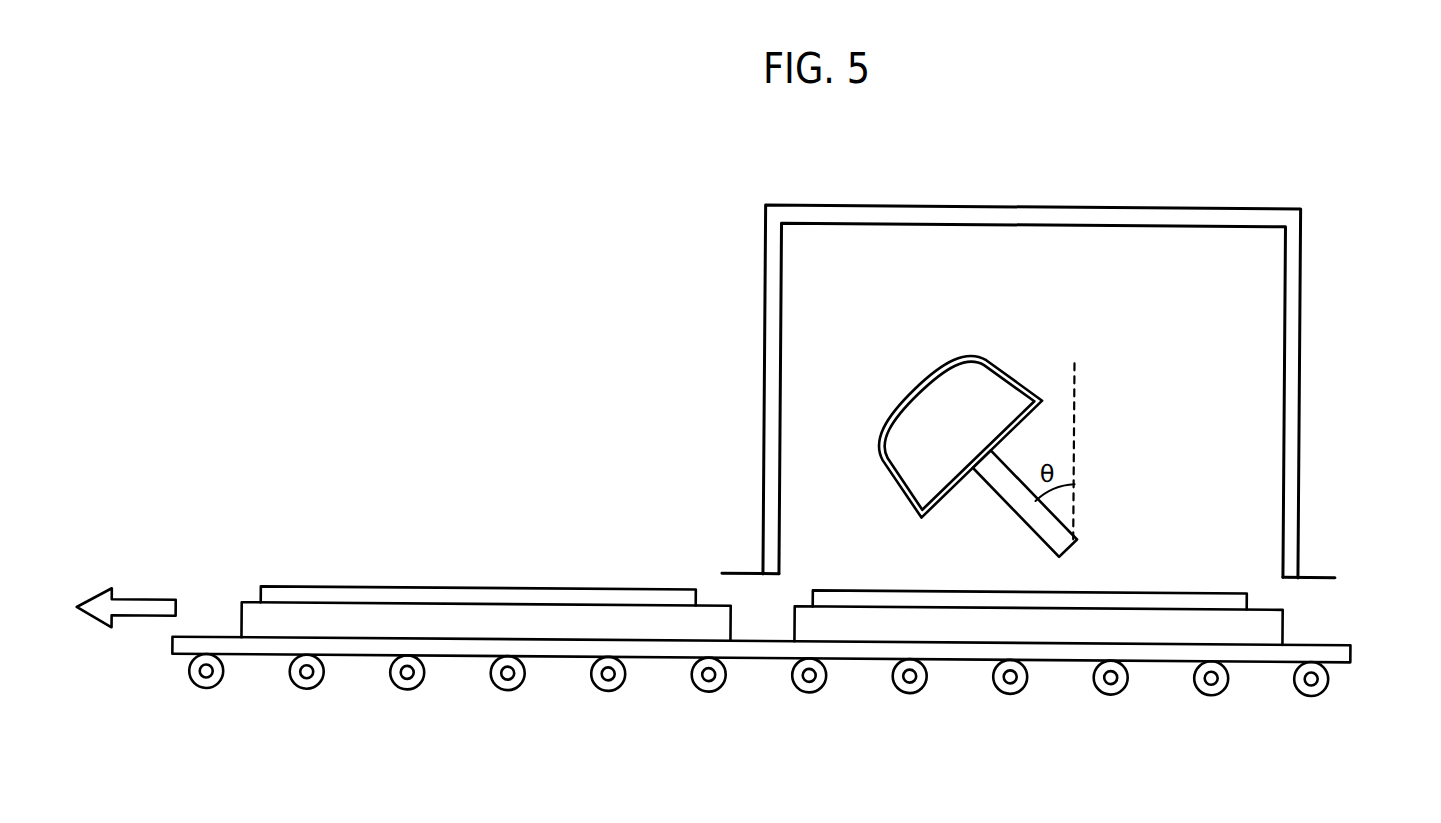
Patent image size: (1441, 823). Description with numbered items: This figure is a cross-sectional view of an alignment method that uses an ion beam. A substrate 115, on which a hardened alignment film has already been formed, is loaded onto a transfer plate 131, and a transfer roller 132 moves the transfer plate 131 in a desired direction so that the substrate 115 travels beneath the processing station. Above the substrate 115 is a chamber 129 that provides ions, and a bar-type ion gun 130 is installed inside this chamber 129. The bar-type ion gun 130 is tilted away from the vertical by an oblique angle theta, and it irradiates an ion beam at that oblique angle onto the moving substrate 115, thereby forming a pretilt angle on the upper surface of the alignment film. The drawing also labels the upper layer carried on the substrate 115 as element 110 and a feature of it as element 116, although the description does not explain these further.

The substrate 110 is at (1192, 594).
The substrate 115 is at (1273, 623).
The substrate edge 116 is at (837, 590).
The chamber 129 is at (764, 348).
The bar-type ion gun 130 is at (1013, 496).
The transfer plate 131 is at (1332, 659).
The transfer roller 132 is at (1330, 673).